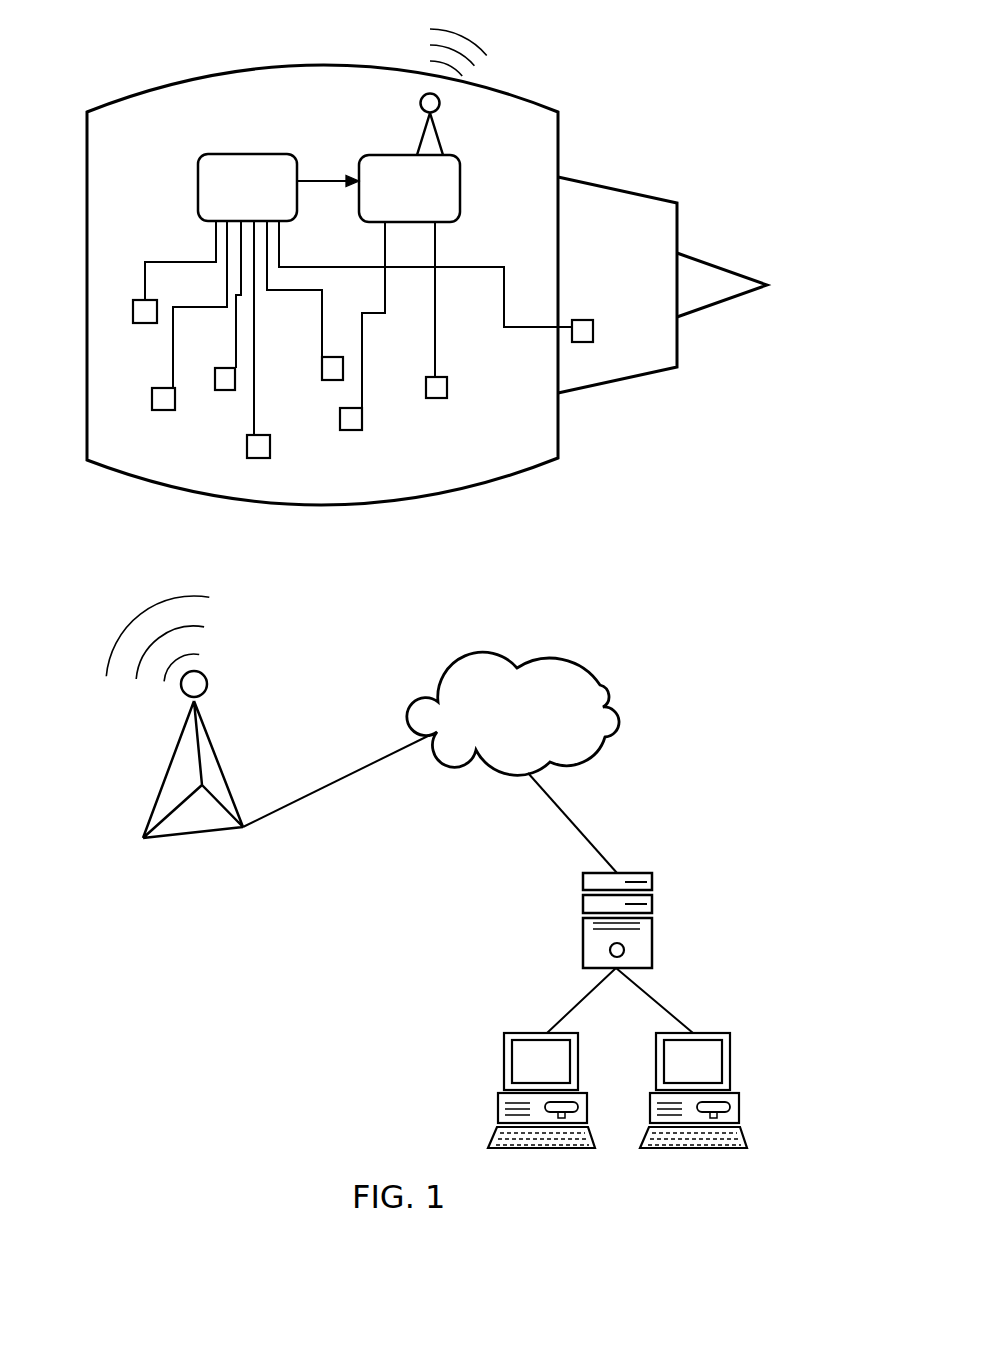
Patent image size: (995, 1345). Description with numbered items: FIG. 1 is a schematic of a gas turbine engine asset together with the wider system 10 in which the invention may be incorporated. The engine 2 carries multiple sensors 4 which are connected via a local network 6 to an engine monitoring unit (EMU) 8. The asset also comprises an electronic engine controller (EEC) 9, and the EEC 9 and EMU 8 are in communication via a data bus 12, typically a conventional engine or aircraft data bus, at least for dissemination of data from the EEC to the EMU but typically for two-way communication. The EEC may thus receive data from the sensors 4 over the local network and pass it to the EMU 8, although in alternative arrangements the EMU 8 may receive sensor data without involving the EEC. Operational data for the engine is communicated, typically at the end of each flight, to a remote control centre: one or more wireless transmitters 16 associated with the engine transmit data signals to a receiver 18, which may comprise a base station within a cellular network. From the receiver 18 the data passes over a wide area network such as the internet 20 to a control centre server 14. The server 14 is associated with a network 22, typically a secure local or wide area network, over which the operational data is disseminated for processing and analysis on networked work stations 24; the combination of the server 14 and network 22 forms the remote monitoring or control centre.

The engine 2 is at (152, 108).
The sensors 4 is at (133, 317).
The local network 6 is at (216, 242).
The engine monitoring unit 8 is at (392, 180).
The electronic engine controller 9 is at (248, 182).
The wider system 10 is at (733, 166).
The data bus 12 is at (323, 178).
The control centre server 14 is at (623, 873).
The wireless transmitters 16 is at (442, 137).
The receiver 18 is at (217, 752).
The internet 20 is at (505, 683).
The network 22 is at (658, 997).
The networked work stations 24 is at (735, 1108).